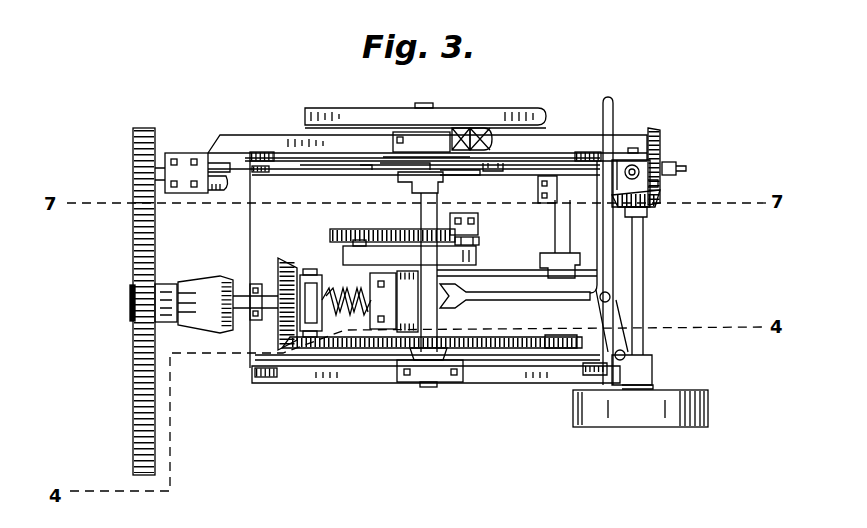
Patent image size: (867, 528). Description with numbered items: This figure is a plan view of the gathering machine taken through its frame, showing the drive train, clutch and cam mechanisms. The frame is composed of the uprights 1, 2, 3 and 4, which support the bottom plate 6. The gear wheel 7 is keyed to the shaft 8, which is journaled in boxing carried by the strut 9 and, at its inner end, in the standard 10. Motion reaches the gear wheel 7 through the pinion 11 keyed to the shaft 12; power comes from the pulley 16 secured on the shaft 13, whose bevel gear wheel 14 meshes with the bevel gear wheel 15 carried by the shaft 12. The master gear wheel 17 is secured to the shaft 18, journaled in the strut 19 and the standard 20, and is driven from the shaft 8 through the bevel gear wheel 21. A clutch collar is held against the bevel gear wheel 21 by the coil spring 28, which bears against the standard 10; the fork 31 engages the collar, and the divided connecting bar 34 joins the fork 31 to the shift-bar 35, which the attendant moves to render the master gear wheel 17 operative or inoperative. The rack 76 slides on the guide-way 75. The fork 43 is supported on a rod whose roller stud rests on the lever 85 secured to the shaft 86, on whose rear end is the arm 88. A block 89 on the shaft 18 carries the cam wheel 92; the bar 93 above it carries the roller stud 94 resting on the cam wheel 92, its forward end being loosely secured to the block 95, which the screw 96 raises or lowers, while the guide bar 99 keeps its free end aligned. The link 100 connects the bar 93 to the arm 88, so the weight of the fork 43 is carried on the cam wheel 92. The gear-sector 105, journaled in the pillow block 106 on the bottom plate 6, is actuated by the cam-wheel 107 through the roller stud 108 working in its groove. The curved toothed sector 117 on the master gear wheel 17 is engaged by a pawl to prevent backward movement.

The upright 1 is at (267, 378).
The upright 2 is at (583, 364).
The upright 3 is at (260, 150).
The upright 4 is at (583, 151).
The bottom plate 6 is at (258, 219).
The gear wheel 7 is at (137, 380).
The shaft 8 is at (245, 313).
The strut 9 is at (201, 282).
The standard 10 is at (383, 301).
The pinion 11 is at (157, 153).
The shaft 12 is at (225, 165).
The shaft 13 is at (644, 279).
The bevel gear wheel 14 is at (650, 212).
The bevel gear wheel 15 is at (661, 139).
The pulley 16 is at (673, 421).
The master gear wheel 17 is at (432, 354).
The shaft 18 is at (418, 204).
The strut 19 is at (508, 382).
The standard 20 is at (430, 140).
The bevel gear wheel 21 is at (284, 258).
The coil spring 28 is at (360, 335).
The fork 31 is at (313, 272).
The connecting bar 34 is at (573, 305).
The shift-bar 35 is at (609, 104).
The fork 43 is at (403, 325).
The guide-way 75 is at (477, 127).
The rack 76 is at (460, 127).
The lever 85 is at (515, 295).
The shaft 86 is at (567, 241).
The arm 88 is at (542, 155).
The block 89 is at (445, 176).
The cam wheel 92 is at (467, 176).
The bar 93 is at (303, 165).
The roller stud 94 is at (400, 173).
The block 95 is at (654, 186).
The screw 96 is at (640, 150).
The guide bar 99 is at (261, 173).
The link 100 is at (496, 172).
The gear-sector 105 is at (333, 233).
The pillow block 106 is at (478, 219).
The cam-wheel 107 is at (409, 252).
The roller stud 108 is at (480, 242).
The curved toothed sector 117 is at (550, 349).